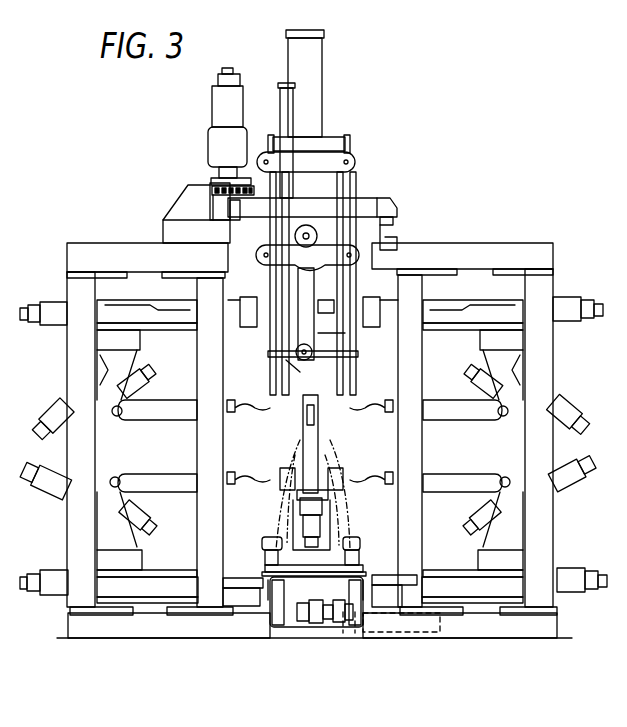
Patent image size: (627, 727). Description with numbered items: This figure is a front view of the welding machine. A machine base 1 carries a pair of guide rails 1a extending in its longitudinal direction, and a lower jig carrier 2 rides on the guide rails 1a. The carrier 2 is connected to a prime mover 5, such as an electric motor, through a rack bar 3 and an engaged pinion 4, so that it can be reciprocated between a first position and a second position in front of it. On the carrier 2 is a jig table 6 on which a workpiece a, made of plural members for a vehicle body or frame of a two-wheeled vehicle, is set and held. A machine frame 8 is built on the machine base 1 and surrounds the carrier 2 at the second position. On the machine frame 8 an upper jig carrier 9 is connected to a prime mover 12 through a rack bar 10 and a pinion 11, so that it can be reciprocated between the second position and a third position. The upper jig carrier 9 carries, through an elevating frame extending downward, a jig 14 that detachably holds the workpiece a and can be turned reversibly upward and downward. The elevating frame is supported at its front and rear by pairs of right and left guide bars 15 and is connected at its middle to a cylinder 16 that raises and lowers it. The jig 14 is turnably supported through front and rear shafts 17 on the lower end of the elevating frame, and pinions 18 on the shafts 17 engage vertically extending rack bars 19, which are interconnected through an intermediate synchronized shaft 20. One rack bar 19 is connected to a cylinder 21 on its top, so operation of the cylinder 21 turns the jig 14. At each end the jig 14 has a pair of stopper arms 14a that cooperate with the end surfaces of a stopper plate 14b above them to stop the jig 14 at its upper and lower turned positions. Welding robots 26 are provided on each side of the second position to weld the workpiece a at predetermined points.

The machine base 1 is at (218, 636).
The pair of guide rails 1a is at (272, 588).
The lower jig carrier 2 is at (272, 578).
The rack bar 3 is at (255, 587).
The pinion 4 is at (298, 632).
The prime mover 5 is at (413, 628).
The jig table 6 is at (305, 446).
The machine frame 8 is at (72, 355).
The upper jig carrier 9 is at (360, 200).
The rack bar 10 is at (250, 185).
The pinion 11 is at (208, 193).
The prime mover 12 is at (222, 103).
The jig 14 is at (320, 360).
The stopper arms 14a is at (300, 352).
The stopper plate 14b is at (325, 312).
The guide bars 15 is at (290, 356).
The cylinder 16 is at (313, 70).
The shafts 17 is at (318, 342).
The pinions 18 is at (300, 362).
The rack bars 19 is at (290, 292).
The intermediate synchronized shaft 20 is at (318, 237).
The cylinder 21 is at (283, 92).
The welding robots 26 is at (175, 482).
The workpiece a is at (330, 462).